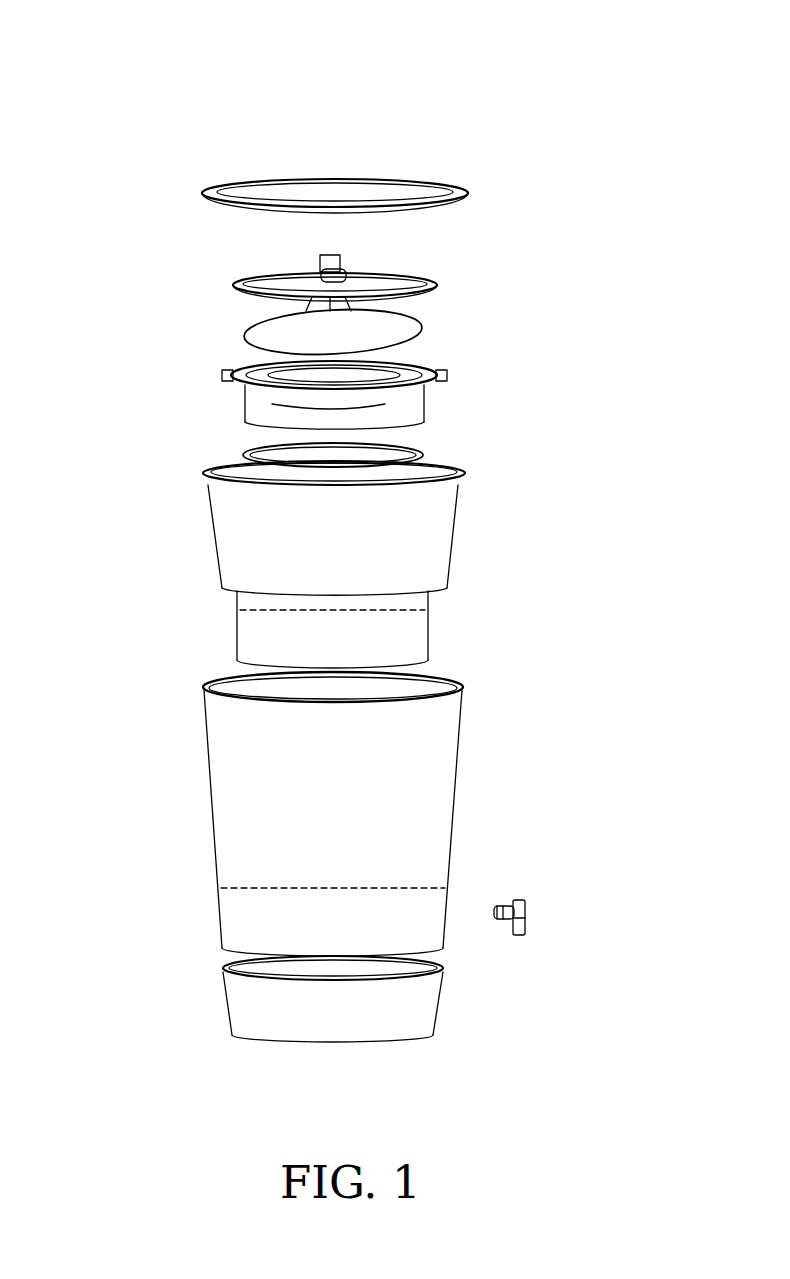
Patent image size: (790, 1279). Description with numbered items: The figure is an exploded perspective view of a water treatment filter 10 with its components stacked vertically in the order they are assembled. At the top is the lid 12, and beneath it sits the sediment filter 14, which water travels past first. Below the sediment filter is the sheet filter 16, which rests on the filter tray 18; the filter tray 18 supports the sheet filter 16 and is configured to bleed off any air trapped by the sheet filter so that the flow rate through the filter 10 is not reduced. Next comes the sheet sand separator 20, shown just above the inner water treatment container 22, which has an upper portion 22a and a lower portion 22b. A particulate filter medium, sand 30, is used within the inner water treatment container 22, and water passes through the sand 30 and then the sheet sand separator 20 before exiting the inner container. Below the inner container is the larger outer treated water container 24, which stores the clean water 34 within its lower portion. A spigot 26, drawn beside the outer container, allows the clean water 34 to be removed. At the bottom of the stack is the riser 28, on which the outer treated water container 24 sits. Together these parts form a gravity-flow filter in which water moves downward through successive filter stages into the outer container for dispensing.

The filter 10 is at (603, 136).
The lid 12 is at (200, 198).
The sediment filter 14 is at (235, 280).
The sheet filter 16 is at (420, 330).
The filter tray 18 is at (222, 375).
The sheet sand separator 20 is at (428, 452).
The inner water treatment container 22 is at (320, 538).
The upper portion 22a is at (451, 528).
The lower portion 22b is at (305, 629).
The outer treated water container 24 is at (280, 814).
The spigot 26 is at (530, 900).
The riser 28 is at (230, 994).
The sand 30 is at (398, 610).
The clean water 34 is at (218, 912).